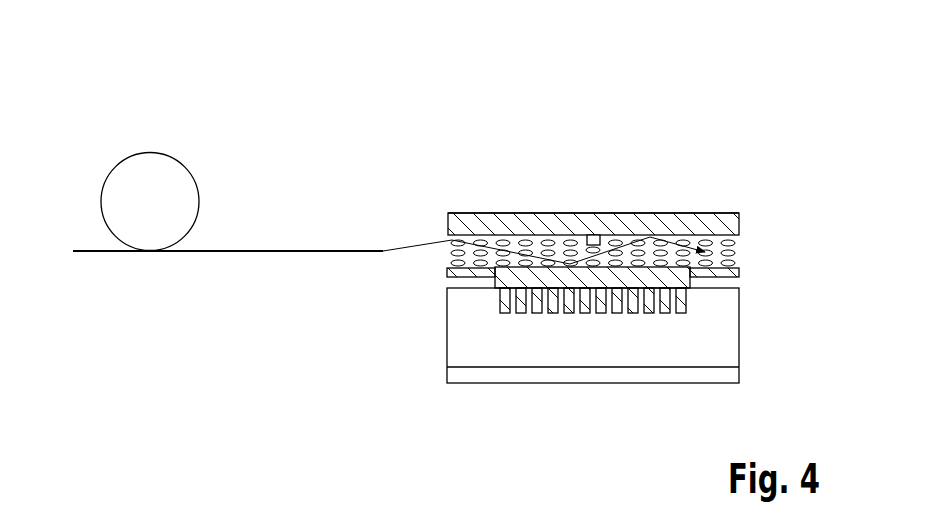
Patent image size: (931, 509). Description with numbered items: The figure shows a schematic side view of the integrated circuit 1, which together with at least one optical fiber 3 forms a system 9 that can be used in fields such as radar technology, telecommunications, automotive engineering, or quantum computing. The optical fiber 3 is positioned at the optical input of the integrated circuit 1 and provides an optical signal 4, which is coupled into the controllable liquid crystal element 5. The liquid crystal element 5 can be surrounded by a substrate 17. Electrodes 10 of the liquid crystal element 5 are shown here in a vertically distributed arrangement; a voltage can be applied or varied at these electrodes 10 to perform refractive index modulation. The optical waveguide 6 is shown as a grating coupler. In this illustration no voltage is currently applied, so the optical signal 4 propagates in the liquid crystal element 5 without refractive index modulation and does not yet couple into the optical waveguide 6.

The integrated circuit 1 is at (645, 384).
The optical fiber 3 is at (100, 183).
The optical signal 4 is at (418, 247).
The liquid crystal element 5 is at (710, 210).
The optical waveguide 6 is at (518, 314).
The system 9 is at (352, 84).
The electrodes 10 is at (594, 235).
The substrate 17 is at (637, 213).